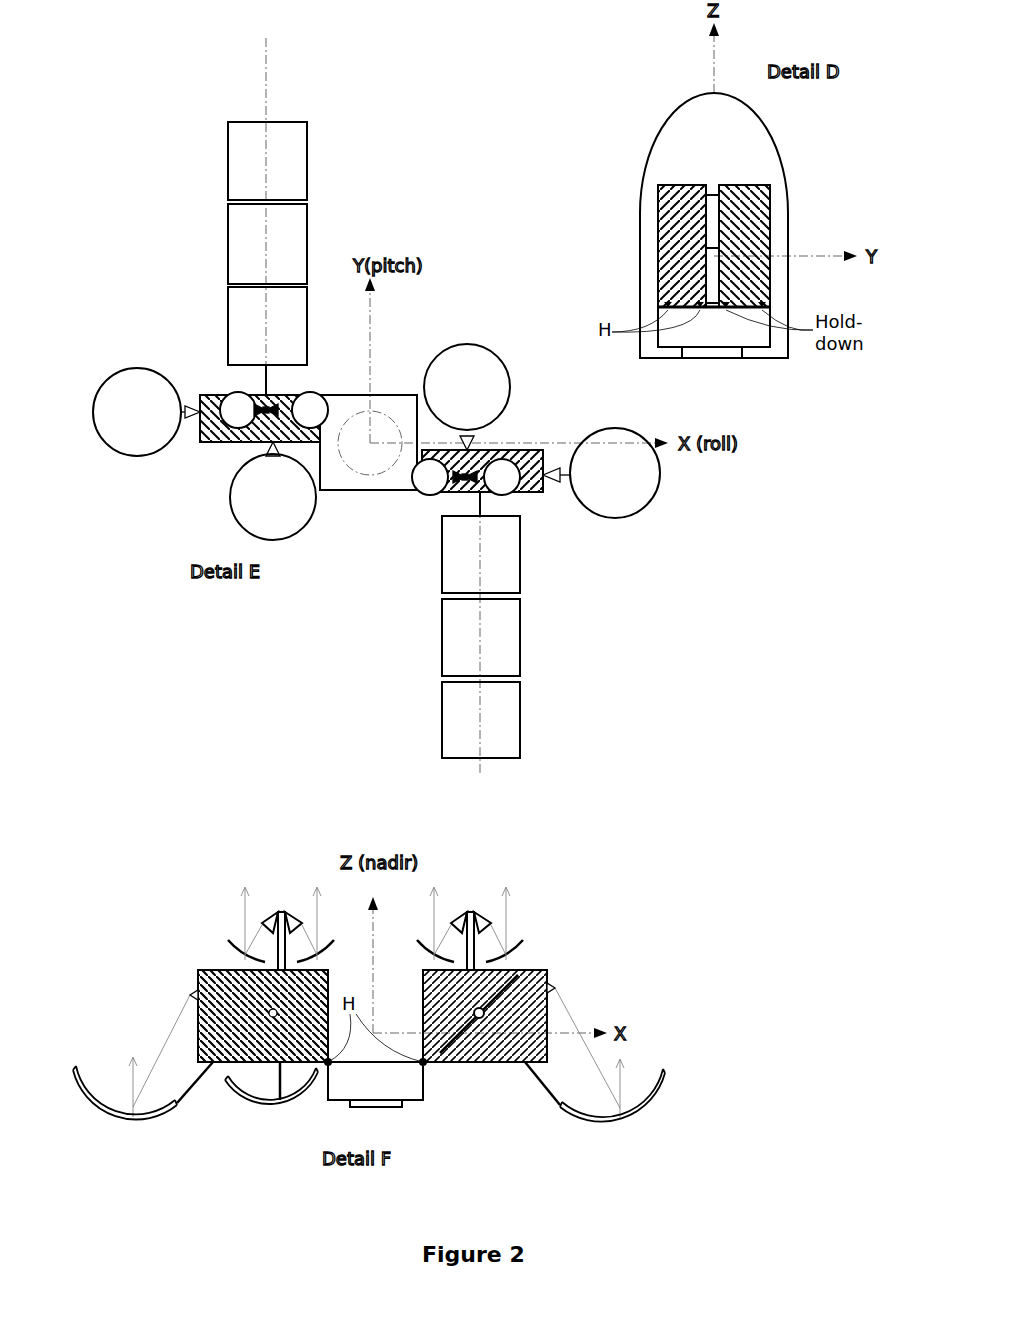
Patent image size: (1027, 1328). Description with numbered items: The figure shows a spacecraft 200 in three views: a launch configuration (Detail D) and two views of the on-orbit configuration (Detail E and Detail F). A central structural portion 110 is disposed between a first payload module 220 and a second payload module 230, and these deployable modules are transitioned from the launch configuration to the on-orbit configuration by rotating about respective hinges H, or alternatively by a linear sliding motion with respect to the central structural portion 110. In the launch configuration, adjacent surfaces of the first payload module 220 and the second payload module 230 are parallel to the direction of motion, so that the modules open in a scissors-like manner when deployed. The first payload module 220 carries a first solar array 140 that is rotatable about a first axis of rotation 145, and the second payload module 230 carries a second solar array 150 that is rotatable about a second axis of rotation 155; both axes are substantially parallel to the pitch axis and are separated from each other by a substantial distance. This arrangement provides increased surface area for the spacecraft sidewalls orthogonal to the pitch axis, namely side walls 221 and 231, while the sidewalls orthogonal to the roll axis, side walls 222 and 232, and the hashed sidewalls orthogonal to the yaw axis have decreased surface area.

The spacecraft 200 is at (190, 24).
The first axis of rotation 145 is at (266, 60).
The first solar array 140 is at (228, 245).
The second solar array 150 is at (520, 630).
The second axis of rotation 155 is at (480, 660).
The central structural portion 110 is at (345, 492).
The first payload module 220 is at (235, 442).
The side wall 221 is at (218, 392).
The side wall 222 is at (193, 428).
The second payload module 230 is at (477, 462).
The side wall 231 is at (523, 450).
The side wall 232 is at (545, 489).